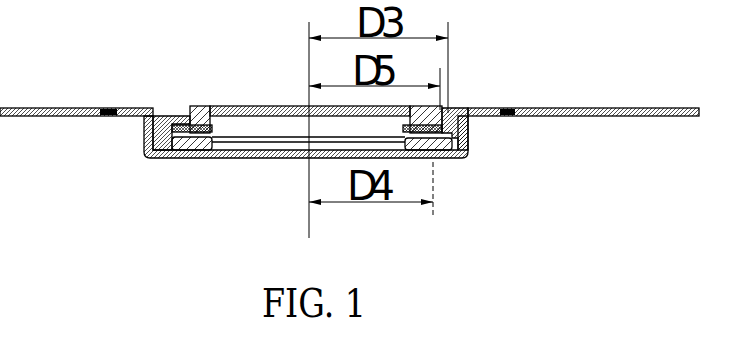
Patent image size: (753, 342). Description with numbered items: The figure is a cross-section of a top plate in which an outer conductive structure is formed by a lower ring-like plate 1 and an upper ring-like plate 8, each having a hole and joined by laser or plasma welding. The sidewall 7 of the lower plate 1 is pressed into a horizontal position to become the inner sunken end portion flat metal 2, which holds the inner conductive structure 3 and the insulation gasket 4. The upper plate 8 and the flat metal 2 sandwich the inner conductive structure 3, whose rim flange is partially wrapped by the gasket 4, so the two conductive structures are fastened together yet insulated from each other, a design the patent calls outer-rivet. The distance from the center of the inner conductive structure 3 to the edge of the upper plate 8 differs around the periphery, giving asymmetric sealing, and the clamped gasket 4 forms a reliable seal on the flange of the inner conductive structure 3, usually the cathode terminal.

The lower ring-like plate 1 is at (620, 108).
The inner sunken end portion flat metal 2 is at (450, 158).
The inner conductive structure 3 is at (246, 107).
The insulation gasket 4 is at (169, 114).
The sidewall 7 is at (150, 157).
The upper ring-like plate 8 is at (468, 110).